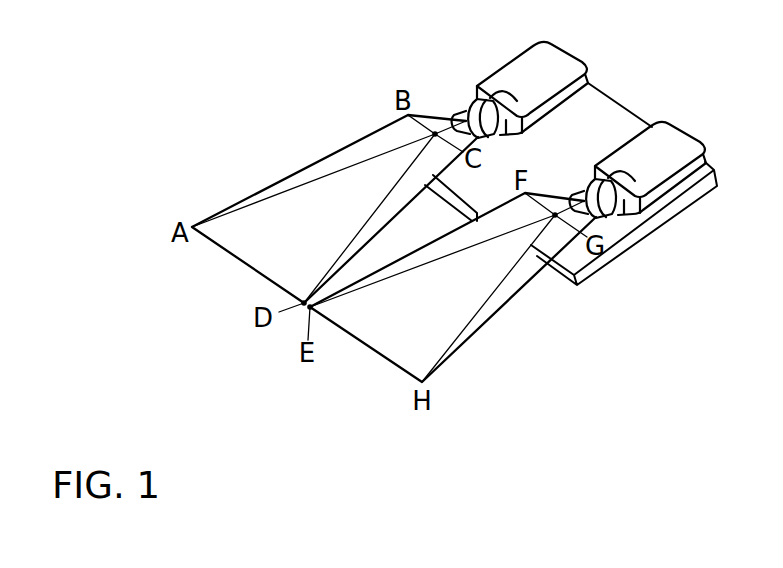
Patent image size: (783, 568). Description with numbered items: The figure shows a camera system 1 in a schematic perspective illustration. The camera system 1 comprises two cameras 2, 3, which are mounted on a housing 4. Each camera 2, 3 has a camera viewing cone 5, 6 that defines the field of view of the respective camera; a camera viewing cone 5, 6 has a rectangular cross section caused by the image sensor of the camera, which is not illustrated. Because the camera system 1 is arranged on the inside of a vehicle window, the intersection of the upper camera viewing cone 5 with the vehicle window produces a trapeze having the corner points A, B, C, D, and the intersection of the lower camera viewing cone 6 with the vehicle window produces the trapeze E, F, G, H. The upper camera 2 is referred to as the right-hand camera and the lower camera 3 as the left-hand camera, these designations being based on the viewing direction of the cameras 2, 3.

The camera system 1 is at (594, 146).
The camera 2 is at (485, 112).
The camera 3 is at (603, 192).
The housing 4 is at (718, 187).
The camera viewing cone 5 is at (343, 147).
The camera viewing cone 6 is at (517, 292).